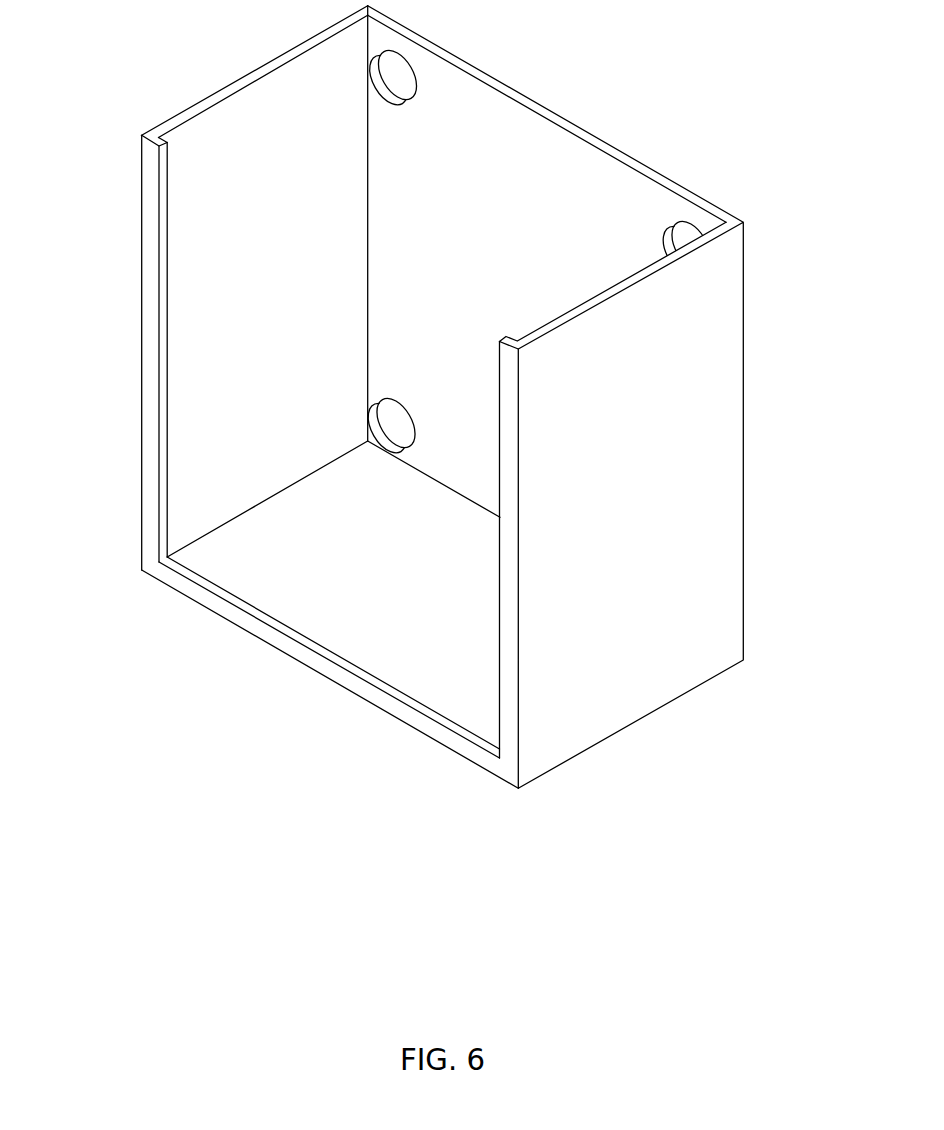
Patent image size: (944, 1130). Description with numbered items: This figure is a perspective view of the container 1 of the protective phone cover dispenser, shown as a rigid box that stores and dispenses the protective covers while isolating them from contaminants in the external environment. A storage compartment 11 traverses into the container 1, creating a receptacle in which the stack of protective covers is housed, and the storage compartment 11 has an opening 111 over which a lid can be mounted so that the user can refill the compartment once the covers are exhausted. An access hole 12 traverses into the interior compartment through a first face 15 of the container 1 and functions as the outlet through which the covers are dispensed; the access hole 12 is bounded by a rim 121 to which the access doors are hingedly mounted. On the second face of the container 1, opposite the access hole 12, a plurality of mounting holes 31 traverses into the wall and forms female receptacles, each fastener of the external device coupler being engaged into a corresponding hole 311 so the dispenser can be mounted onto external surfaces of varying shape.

The container 1 is at (407, 454).
The storage compartment 11 is at (547, 230).
The opening 111 is at (252, 71).
The access hole 12 is at (330, 657).
The rim 121 is at (253, 603).
The first face 15 is at (153, 243).
The mounting holes 31 is at (404, 74).
The hole 311 is at (397, 417).